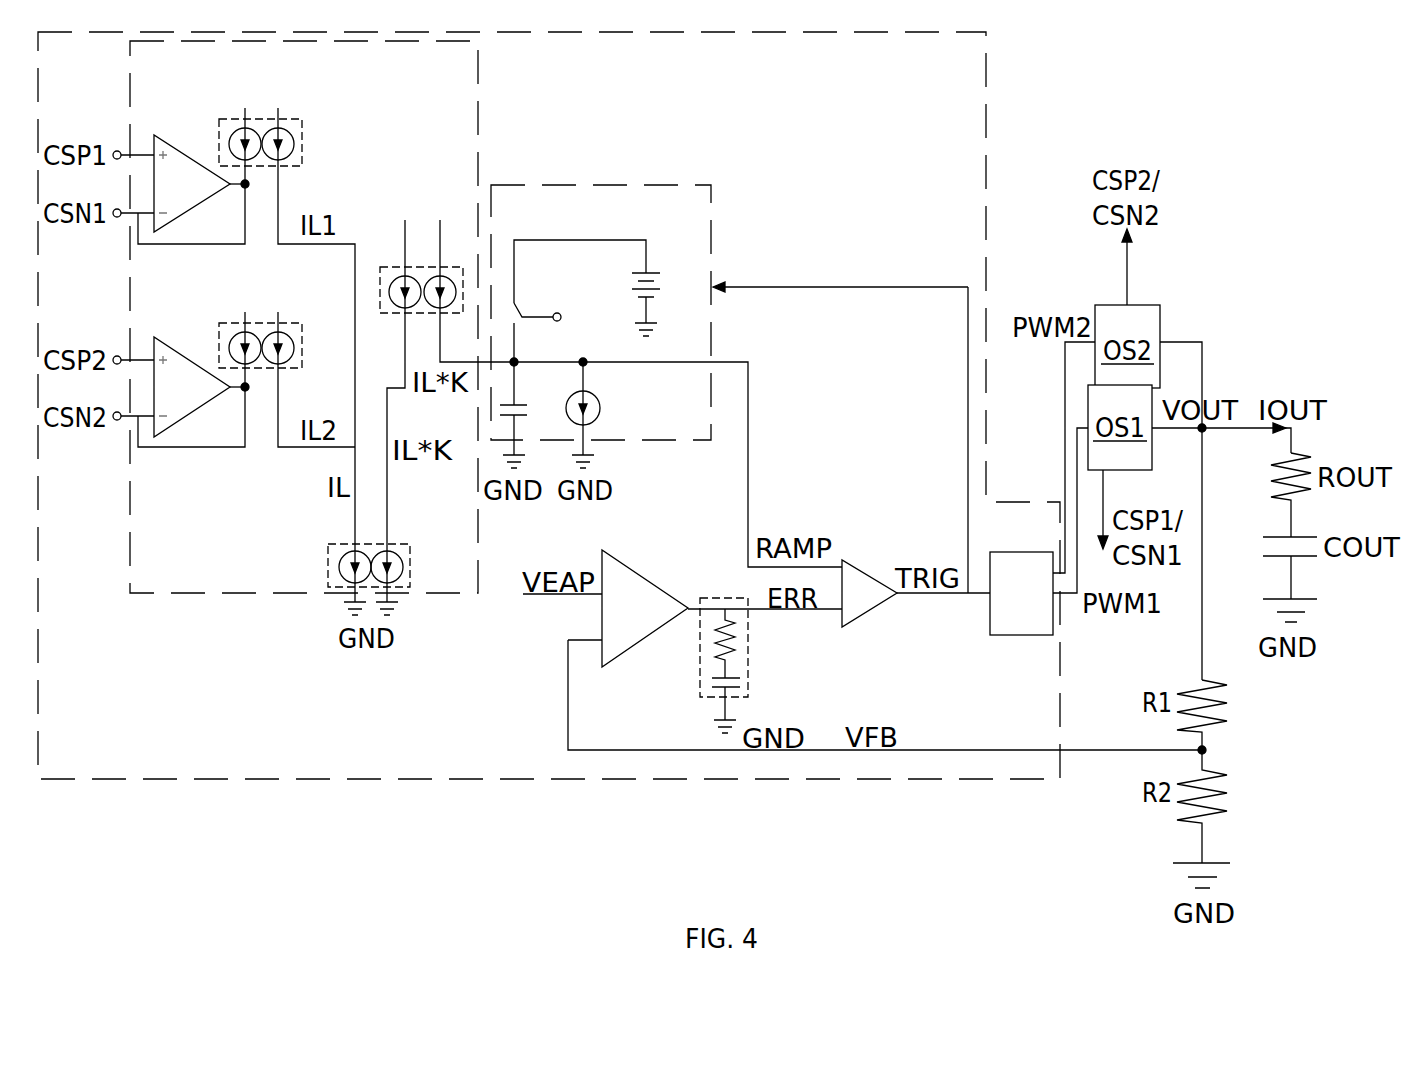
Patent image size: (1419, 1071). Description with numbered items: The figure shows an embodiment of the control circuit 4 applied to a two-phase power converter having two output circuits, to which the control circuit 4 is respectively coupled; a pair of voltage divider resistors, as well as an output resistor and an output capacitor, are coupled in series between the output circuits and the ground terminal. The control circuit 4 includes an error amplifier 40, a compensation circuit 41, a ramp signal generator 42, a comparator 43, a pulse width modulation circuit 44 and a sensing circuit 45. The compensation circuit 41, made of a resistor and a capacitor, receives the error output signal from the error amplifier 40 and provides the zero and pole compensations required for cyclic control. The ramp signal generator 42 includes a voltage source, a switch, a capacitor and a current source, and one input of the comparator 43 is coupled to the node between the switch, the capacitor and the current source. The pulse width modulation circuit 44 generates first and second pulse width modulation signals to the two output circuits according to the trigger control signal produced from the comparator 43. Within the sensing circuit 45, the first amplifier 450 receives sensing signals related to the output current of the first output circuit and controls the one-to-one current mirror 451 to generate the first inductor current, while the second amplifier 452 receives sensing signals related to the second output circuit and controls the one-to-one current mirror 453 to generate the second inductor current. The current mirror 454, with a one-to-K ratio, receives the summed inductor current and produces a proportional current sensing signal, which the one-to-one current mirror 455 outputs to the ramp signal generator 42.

The control circuit 4 is at (974, 68).
The sensing circuit 45 is at (464, 72).
The amplifier 450 is at (209, 196).
The current mirror 451 is at (297, 119).
The amplifier 452 is at (209, 401).
The current mirror 453 is at (297, 323).
The current mirror 454 is at (410, 544).
The current mirror 455 is at (380, 267).
The ramp signal generator 42 is at (695, 222).
The error amplifier 40 is at (649, 626).
The compensation circuit 41 is at (700, 638).
The comparator 43 is at (874, 607).
The pulse width modulation circuit 44 is at (1039, 607).